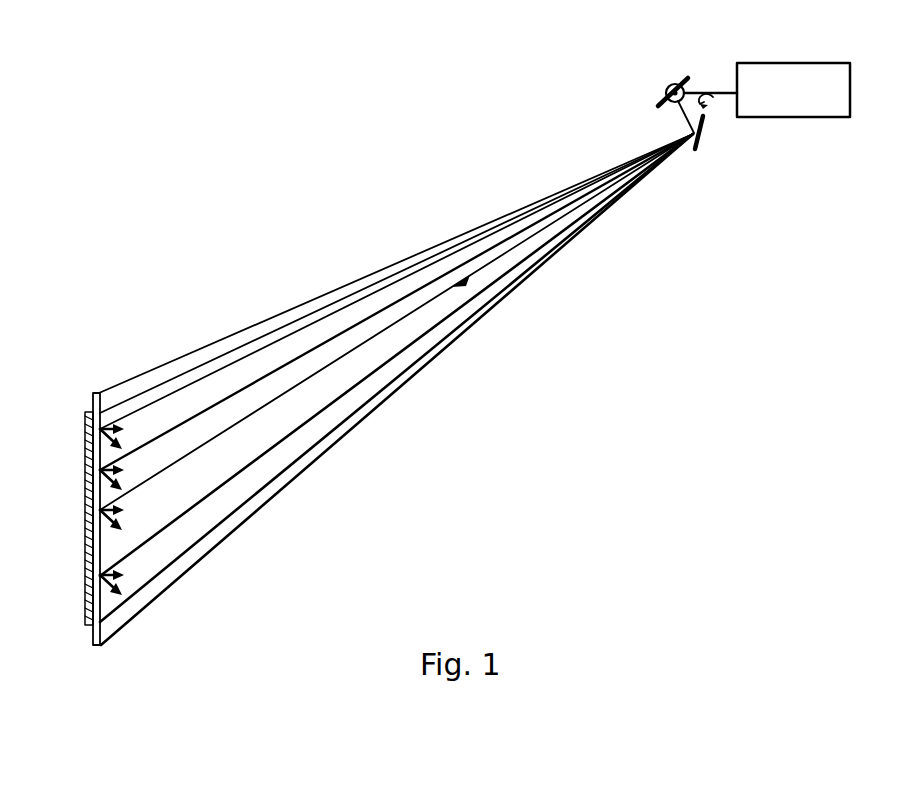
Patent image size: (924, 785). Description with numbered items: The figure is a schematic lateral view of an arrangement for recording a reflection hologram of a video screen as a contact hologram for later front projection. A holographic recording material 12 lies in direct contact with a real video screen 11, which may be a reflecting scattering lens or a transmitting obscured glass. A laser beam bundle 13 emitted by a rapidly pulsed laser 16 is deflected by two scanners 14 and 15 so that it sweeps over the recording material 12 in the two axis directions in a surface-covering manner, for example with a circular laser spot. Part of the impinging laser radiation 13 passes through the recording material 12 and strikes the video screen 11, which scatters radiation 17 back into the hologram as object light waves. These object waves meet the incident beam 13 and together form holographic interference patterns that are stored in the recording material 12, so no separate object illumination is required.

The video screen 11 is at (84, 606).
The holographic recording material 12 is at (104, 648).
The laser beam bundle 13 is at (451, 346).
The scanner 14 is at (705, 134).
The scanner 15 is at (666, 93).
The rapidly pulsed laser 16 is at (800, 46).
The scattered radiation 17 is at (124, 510).